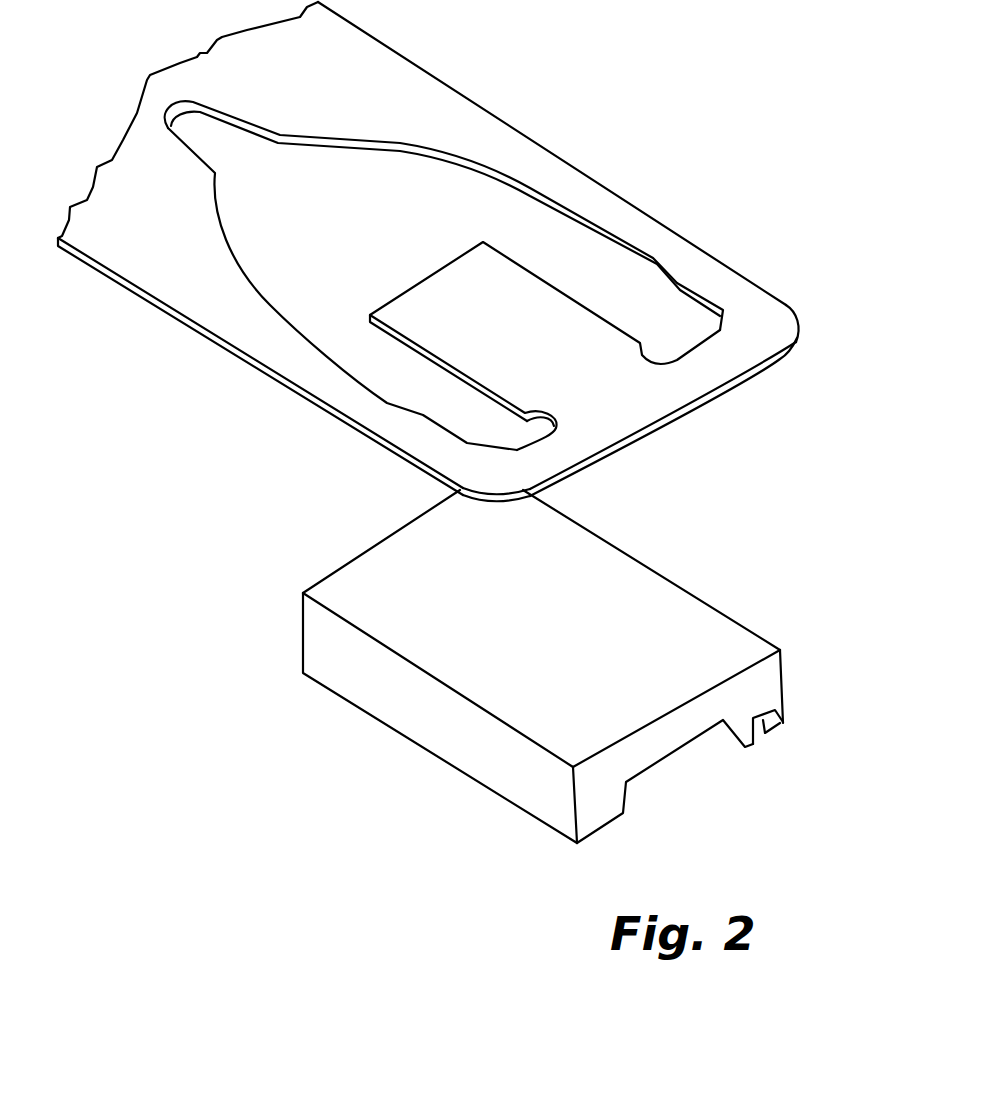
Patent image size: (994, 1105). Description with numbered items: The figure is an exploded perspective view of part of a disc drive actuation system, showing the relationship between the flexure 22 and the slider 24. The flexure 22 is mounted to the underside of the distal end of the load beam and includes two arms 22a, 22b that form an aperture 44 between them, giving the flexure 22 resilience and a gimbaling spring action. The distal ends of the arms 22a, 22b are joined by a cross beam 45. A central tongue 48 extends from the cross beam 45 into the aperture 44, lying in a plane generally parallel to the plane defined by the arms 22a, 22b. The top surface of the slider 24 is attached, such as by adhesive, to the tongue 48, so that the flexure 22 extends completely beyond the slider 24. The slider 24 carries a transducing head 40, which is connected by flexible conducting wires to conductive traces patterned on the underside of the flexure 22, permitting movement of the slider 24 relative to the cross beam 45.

The flexure 22 is at (395, 65).
The flexure arm 22a is at (632, 215).
The flexure arm 22b is at (337, 387).
The aperture 44 is at (443, 177).
The cross beam 45 is at (627, 395).
The central tongue 48 is at (540, 298).
The slider 24 is at (460, 738).
The transducing head 40 is at (767, 728).